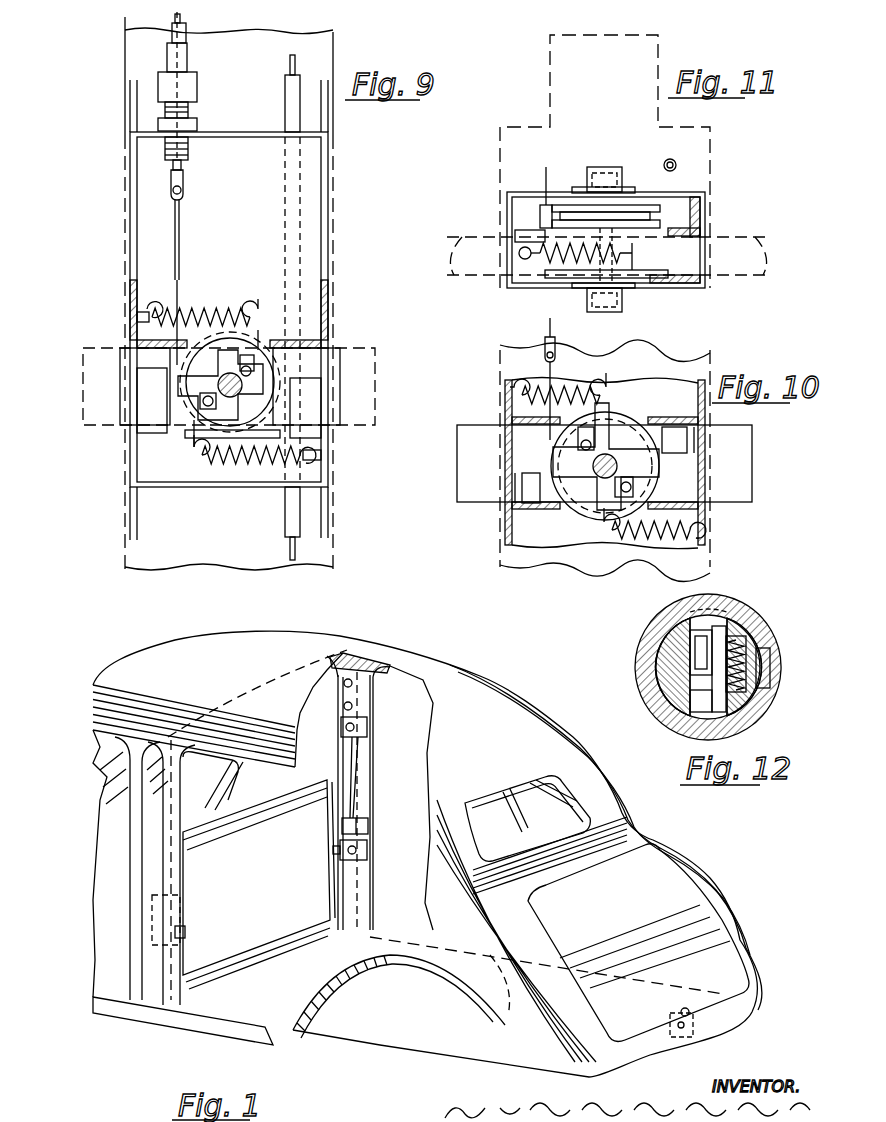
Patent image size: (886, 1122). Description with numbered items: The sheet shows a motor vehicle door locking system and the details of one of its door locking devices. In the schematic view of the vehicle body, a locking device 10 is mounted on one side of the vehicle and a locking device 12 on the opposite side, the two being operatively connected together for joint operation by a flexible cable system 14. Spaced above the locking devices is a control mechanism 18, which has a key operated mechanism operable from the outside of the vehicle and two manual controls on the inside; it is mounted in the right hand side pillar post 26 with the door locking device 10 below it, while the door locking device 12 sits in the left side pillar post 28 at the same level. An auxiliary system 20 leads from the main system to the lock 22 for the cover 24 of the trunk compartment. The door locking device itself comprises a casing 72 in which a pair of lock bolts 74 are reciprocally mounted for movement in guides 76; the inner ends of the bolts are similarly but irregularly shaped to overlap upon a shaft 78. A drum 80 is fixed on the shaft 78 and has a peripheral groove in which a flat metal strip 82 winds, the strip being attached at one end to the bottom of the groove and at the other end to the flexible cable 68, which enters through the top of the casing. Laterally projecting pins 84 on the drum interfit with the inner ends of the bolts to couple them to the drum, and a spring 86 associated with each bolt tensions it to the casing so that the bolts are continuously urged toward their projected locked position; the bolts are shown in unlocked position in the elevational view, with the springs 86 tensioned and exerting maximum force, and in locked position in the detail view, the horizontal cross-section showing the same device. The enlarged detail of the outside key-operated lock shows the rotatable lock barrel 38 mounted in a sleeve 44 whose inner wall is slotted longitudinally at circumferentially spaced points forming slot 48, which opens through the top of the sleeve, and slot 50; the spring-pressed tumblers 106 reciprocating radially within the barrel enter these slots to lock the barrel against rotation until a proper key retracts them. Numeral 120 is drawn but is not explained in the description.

In FIG. 9, the locking device 10 is at (377, 179).
In FIG. 1, the locking device 10 is at (368, 826).
In FIG. 1, the locking device 12 is at (181, 900).
In FIG. 1, the flexible cable system 14 is at (243, 683).
In FIG. 1, the control mechanism 18 is at (368, 730).
In FIG. 1, the auxiliary system 20 is at (408, 899).
In FIG. 1, the lock 22 is at (697, 1027).
In FIG. 1, the cover 24 is at (652, 890).
In FIG. 9, the right hand side pillar post 26 is at (122, 50).
In FIG. 11, the right hand side pillar post 26 is at (498, 160).
In FIG. 10, the right hand side pillar post 26 is at (605, 461).
In FIG. 1, the right hand side pillar post 26 is at (374, 882).
In FIG. 1, the left side pillar post 28 is at (181, 862).
In FIG. 12, the lock barrel 38 is at (665, 668).
In FIG. 12, the sleeve 44 is at (655, 635).
In FIG. 12, the slot 48 is at (712, 603).
In FIG. 12, the slot 50 is at (770, 660).
In FIG. 9, the flexible cable 68 is at (181, 24).
In FIG. 10, the flexible cable 68 is at (547, 329).
In FIG. 9, the casing 72 is at (328, 252).
In FIG. 11, the casing 72 is at (706, 197).
In FIG. 10, the casing 72 is at (505, 535).
In FIG. 9, the lock bolts 74 is at (118, 360).
In FIG. 11, the lock bolts 74 is at (503, 270).
In FIG. 10, the lock bolts 74 is at (604, 463).
In FIG. 1, the lock bolts 74 is at (187, 932).
In FIG. 9, the guides 76 is at (310, 342).
In FIG. 11, the guides 76 is at (525, 215).
In FIG. 10, the guides 76 is at (676, 417).
In FIG. 9, the shaft 78 is at (250, 395).
In FIG. 11, the shaft 78 is at (604, 167).
In FIG. 10, the shaft 78 is at (607, 452).
In FIG. 11, the drum 80 is at (565, 212).
In FIG. 9, the flat metal strip 82 is at (181, 238).
In FIG. 11, the flat metal strip 82 is at (545, 205).
In FIG. 10, the flat metal strip 82 is at (549, 370).
In FIG. 9, the pins 84 is at (241, 368).
In FIG. 10, the pins 84 is at (586, 455).
In FIG. 9, the spring 86 is at (242, 306).
In FIG. 11, the spring 86 is at (548, 257).
In FIG. 10, the spring 86 is at (583, 386).
In FIG. 12, the tumblers 106 is at (703, 705).
In FIG. 9, the mounting bolt 120 is at (312, 555).
In FIG. 11, the mounting bolt 120 is at (678, 162).